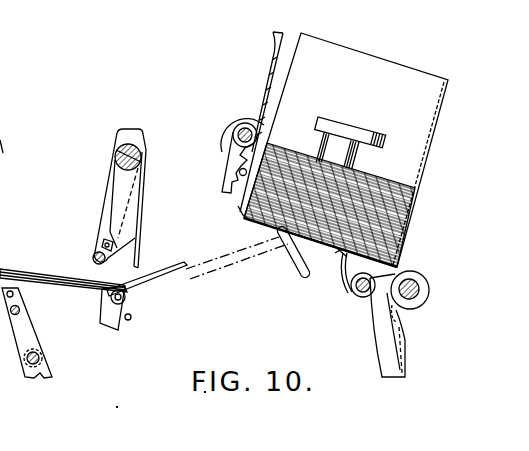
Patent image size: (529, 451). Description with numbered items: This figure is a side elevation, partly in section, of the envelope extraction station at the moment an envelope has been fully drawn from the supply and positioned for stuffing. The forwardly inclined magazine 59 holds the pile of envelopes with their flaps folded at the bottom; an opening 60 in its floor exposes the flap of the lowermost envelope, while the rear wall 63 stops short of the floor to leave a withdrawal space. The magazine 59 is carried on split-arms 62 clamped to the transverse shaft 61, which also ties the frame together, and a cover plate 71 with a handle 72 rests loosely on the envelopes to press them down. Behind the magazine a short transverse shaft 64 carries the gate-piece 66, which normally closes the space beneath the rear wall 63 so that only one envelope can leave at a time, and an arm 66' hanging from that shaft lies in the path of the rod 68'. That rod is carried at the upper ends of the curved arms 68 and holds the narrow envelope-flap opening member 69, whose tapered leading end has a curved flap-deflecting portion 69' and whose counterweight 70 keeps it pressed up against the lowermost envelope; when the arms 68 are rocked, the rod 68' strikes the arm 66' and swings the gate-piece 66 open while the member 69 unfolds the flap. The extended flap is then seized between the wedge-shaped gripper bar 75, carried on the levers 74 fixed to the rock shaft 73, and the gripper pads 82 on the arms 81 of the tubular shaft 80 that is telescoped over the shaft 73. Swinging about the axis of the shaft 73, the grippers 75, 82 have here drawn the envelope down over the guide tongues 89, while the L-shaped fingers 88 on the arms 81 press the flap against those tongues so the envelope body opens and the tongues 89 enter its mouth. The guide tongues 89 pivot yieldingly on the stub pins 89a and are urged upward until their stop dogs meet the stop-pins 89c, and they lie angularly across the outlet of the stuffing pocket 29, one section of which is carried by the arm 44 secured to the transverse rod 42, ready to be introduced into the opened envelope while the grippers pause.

The magazine 59 is at (371, 70).
The rear wall 63 is at (284, 35).
The short transverse shaft 64 is at (250, 124).
The gate-piece 66 is at (232, 176).
The opening 60 is at (246, 227).
The arm 66' is at (285, 251).
The envelope-flap opening member 69 is at (328, 270).
The curved flap-deflecting portion 69' is at (329, 279).
The transverse rod 68' is at (352, 296).
The curved arms 68 is at (376, 325).
The counterweight 70 is at (405, 365).
The split-arms 62 is at (412, 322).
The transverse shaft 61 is at (413, 282).
The cover plate 71 is at (377, 188).
The handle 72 is at (349, 130).
The transverse rock shaft 73 is at (140, 153).
The tubular shaft 80 is at (117, 153).
The levers 74 is at (115, 192).
The L-shaped fingers 88 is at (148, 185).
The gripper arms 81 is at (133, 219).
The gripper pads 82 is at (101, 237).
The gripper bar 75 is at (94, 260).
The stuffing device or pocket 29 is at (28, 272).
The guide tongues 89 is at (146, 283).
The stub shafts or pins 89a is at (111, 298).
The stop-pins 89c is at (131, 317).
The arm 44 is at (27, 336).
The transverse rod 42 is at (40, 357).